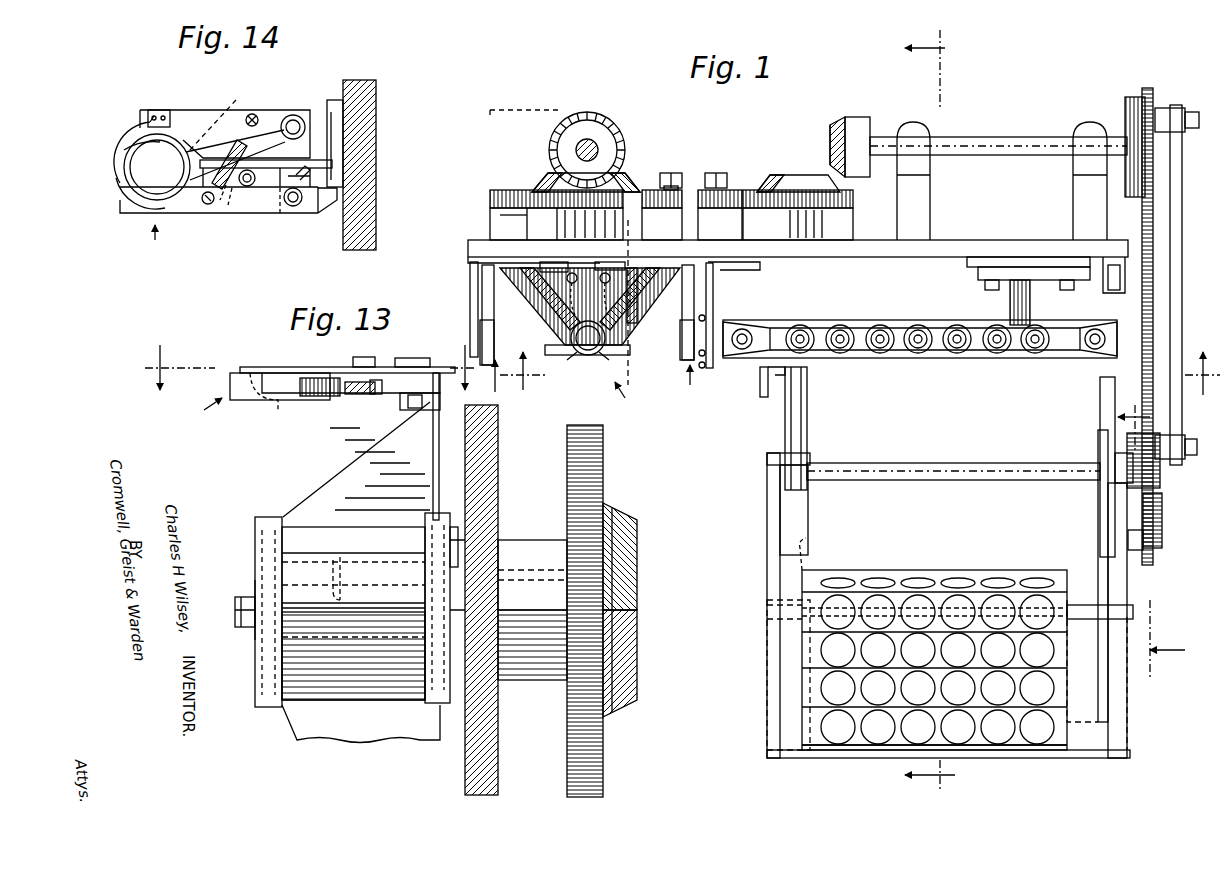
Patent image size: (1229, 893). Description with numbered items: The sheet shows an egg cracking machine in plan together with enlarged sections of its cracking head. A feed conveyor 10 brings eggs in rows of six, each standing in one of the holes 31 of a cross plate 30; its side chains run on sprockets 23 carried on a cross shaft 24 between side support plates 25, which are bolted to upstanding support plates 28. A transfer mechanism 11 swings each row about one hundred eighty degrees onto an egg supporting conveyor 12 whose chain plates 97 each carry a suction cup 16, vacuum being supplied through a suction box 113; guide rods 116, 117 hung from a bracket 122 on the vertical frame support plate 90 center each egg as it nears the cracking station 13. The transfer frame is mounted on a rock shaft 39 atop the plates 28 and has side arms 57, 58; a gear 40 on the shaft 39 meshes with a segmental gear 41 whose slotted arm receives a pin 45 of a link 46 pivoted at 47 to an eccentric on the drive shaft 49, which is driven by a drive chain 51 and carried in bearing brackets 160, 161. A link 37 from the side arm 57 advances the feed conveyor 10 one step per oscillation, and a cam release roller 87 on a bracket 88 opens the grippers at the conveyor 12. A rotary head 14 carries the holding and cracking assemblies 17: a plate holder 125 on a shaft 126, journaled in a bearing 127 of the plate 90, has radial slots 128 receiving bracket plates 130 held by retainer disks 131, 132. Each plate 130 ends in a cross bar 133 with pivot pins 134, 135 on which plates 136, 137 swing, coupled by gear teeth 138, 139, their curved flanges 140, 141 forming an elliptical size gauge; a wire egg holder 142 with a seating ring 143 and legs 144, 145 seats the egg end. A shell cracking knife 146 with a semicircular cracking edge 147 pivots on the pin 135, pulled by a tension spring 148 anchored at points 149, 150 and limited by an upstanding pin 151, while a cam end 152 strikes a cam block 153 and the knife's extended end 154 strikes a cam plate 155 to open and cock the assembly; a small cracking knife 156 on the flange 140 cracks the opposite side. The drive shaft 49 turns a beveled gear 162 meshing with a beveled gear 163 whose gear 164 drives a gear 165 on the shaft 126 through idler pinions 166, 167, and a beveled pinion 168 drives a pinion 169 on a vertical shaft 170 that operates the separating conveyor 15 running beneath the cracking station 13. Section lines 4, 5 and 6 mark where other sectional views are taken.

In FIG. 1, the section line 4- 4 is at (930, 406).
In FIG. 1, the section line 5- 5 is at (1151, 536).
In FIG. 1, the section line 6- 6 is at (860, 374).
In FIG. 1, the feed conveyor 10 is at (752, 604).
In FIG. 1, the transfer mechanism 11 is at (790, 440).
In FIG. 1, the egg supporting conveyor mechanism 12 is at (748, 358).
In FIG. 1, the cracking station 13 is at (695, 386).
In FIG. 13, the rotary head 14 is at (310, 358).
In FIG. 1, the rotary head 14 is at (630, 398).
In FIG. 1, the separating conveyor 15 is at (553, 108).
In FIG. 1, the suction cup 16 is at (918, 325).
In FIG. 14, the egg holding and cracking assembly 17 is at (155, 246).
In FIG. 13, the egg holding and cracking assembly 17 is at (201, 417).
In FIG. 1, the egg holding and cracking assembly 17 is at (682, 333).
In FIG. 1, the sprockets 23 is at (805, 558).
In FIG. 1, the cross shaft 24 is at (1080, 620).
In FIG. 1, the side support plates 25 is at (767, 742).
In FIG. 1, the support plates 28 is at (767, 518).
In FIG. 1, the cross plates 30 is at (812, 662).
In FIG. 1, the holes 31 is at (1000, 742).
In FIG. 1, the link 37 is at (1098, 512).
In FIG. 1, the rock shaft 39 is at (938, 463).
In FIG. 1, the gear 40 is at (1160, 483).
In FIG. 1, the segmental gear 41 is at (1162, 525).
In FIG. 1, the pin 45 is at (1192, 438).
In FIG. 1, the operating link 46 is at (1182, 200).
In FIG. 1, the pivot 47 is at (1194, 112).
In FIG. 1, the drive shaft 49 is at (985, 137).
In FIG. 1, the drive chain 51 is at (1153, 293).
In FIG. 1, the side arm 57 is at (1100, 390).
In FIG. 1, the side arm 58 is at (807, 406).
In FIG. 1, the cam release roller 87 is at (1118, 276).
In FIG. 1, the bracket 88 is at (1125, 262).
In FIG. 14, the frame support plate 90 is at (362, 84).
In FIG. 13, the frame support plate 90 is at (465, 760).
In FIG. 1, the frame support plate 90 is at (972, 240).
In FIG. 1, the chain plates 97 is at (905, 358).
In FIG. 1, the suction box 113 is at (762, 372).
In FIG. 1, the guide rod 116 is at (713, 300).
In FIG. 1, the guide rod 117 is at (702, 370).
In FIG. 1, the bracket 122 is at (715, 275).
In FIG. 13, the plate holder 125 is at (255, 658).
In FIG. 13, the shaft 126 is at (255, 597).
In FIG. 13, the bearing 127 is at (525, 545).
In FIG. 1, the bearing 127 is at (560, 221).
In FIG. 13, the radial slots 128 is at (356, 579).
In FIG. 13, the bracket plates 130 is at (332, 462).
In FIG. 1, the bracket plates 130 is at (640, 268).
In FIG. 13, the inner retainer disk 131 is at (445, 513).
In FIG. 13, the outer retainer disk 132 is at (262, 517).
In FIG. 14, the cross bar 133 is at (280, 215).
In FIG. 13, the cross bar 133 is at (439, 385).
In FIG. 14, the pivot pin 134 is at (293, 115).
In FIG. 14, the pivot pin 135 is at (300, 208).
In FIG. 13, the pivot pin 135 is at (413, 358).
In FIG. 14, the plate 136 is at (206, 110).
In FIG. 14, the plate 137 is at (290, 207).
In FIG. 13, the plate 137 is at (338, 372).
In FIG. 14, the gear teeth 138 is at (316, 126).
In FIG. 14, the gear teeth 139 is at (312, 200).
In FIG. 14, the curved flange 140 is at (136, 128).
In FIG. 1, the curved flange 140 is at (682, 354).
In FIG. 14, the curved flange 141 is at (118, 180).
In FIG. 13, the curved flange 141 is at (240, 373).
In FIG. 1, the curved flange 141 is at (490, 340).
In FIG. 14, the egg holder 142 is at (124, 167).
In FIG. 14, the seating ring 143 is at (124, 153).
In FIG. 13, the seating ring 143 is at (268, 402).
In FIG. 1, the seating ring 143 is at (586, 356).
In FIG. 14, the supporting leg 144 is at (220, 114).
In FIG. 14, the supporting leg 145 is at (226, 208).
In FIG. 13, the supporting leg 145 is at (385, 396).
In FIG. 14, the shell cracking knife 146 is at (130, 214).
In FIG. 13, the shell cracking knife 146 is at (322, 366).
In FIG. 14, the cracking edge 147 is at (150, 190).
In FIG. 14, the tension spring 148 is at (244, 150).
In FIG. 13, the tension spring 148 is at (350, 394).
In FIG. 14, the spring anchorage 149 is at (205, 204).
In FIG. 13, the spring anchorage 149 is at (320, 397).
In FIG. 14, the spring anchorage 150 is at (255, 114).
In FIG. 13, the spring anchorage 150 is at (375, 395).
In FIG. 14, the upstanding pin 151 is at (249, 187).
In FIG. 13, the upstanding pin 151 is at (372, 357).
In FIG. 14, the cam end 152 is at (333, 164).
In FIG. 14, the cam block 153 is at (336, 112).
In FIG. 14, the extended end 154 is at (340, 197).
In FIG. 14, the cam plate 155 is at (338, 138).
In FIG. 1, the cam plate 155 is at (640, 275).
In FIG. 14, the small cracking knife 156 is at (160, 110).
In FIG. 1, the bearing bracket 160 is at (1090, 122).
In FIG. 1, the bearing bracket 161 is at (913, 122).
In FIG. 1, the beveled gear 162 is at (850, 117).
In FIG. 1, the beveled gear 163 is at (805, 175).
In FIG. 1, the gear 164 is at (810, 215).
In FIG. 13, the gear 165 is at (603, 467).
In FIG. 1, the gear 165 is at (502, 190).
In FIG. 1, the idler pinion 166 is at (742, 188).
In FIG. 1, the idler pinion 167 is at (688, 190).
In FIG. 13, the beveled pinion 168 is at (637, 617).
In FIG. 1, the beveled pinion 168 is at (628, 180).
In FIG. 1, the pinion 169 is at (615, 135).
In FIG. 1, the vertical shaft 170 is at (590, 140).